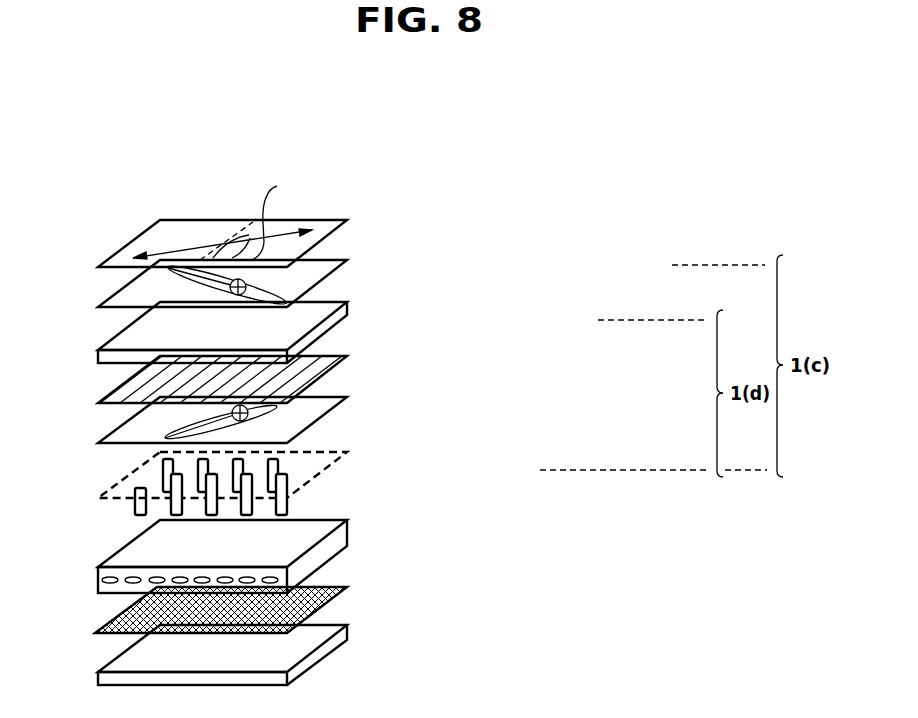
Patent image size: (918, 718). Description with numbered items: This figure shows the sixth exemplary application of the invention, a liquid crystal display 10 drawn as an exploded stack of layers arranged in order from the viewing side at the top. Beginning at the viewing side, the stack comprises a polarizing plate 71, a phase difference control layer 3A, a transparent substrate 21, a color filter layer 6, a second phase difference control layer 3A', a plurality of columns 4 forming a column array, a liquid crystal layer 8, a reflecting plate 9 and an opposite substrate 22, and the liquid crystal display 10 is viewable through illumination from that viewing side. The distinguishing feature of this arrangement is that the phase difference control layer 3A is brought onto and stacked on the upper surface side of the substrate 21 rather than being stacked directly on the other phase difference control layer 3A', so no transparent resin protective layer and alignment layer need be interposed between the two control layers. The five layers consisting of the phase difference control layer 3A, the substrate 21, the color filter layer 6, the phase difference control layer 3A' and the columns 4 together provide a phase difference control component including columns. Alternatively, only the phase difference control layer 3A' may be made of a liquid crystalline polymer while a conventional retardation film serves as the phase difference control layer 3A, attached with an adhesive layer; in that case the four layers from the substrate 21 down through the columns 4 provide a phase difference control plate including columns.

The liquid crystal display 10 is at (59, 238).
The polarizing plate (1) 71 is at (337, 230).
The phase difference control layer (A) 3A is at (431, 284).
The substrate (1) 21 is at (340, 312).
The color filter layer 6 is at (340, 356).
The phase difference control layer (A) 3A' is at (384, 421).
The columns 4 is at (322, 470).
The liquid crystal layer 8 is at (340, 538).
The reflecting plate 9 is at (347, 587).
The substrate (2) 22 is at (345, 637).